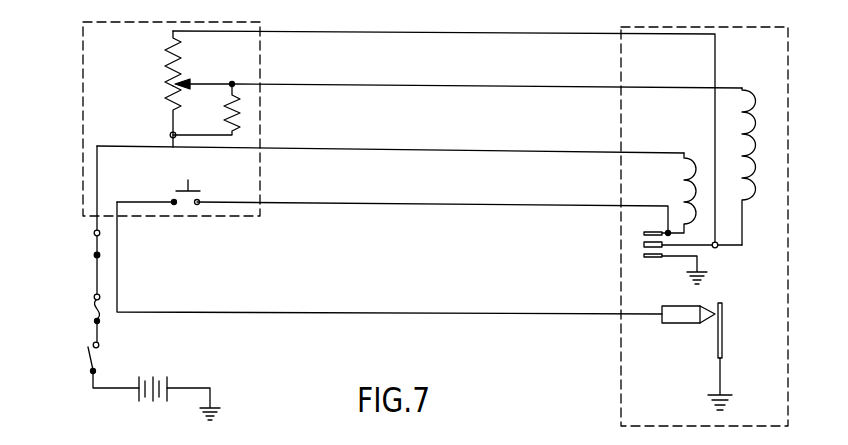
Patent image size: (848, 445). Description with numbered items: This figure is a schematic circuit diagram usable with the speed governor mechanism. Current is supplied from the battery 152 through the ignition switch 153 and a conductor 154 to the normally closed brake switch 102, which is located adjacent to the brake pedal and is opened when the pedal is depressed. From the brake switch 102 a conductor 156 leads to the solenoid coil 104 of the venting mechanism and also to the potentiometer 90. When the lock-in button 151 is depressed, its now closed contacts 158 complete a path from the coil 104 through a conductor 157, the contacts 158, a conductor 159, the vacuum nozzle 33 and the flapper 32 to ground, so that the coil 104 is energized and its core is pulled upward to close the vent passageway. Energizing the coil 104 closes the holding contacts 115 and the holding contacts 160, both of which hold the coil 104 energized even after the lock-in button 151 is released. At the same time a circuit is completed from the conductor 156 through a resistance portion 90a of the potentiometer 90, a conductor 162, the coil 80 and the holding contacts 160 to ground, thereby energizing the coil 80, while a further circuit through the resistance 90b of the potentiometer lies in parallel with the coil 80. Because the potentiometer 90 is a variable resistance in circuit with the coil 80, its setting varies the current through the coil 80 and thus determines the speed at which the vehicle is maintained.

The potentiometer 90 is at (142, 75).
The resistance portion of the potentiometer 90a is at (165, 97).
The resistance of the potentiometer 90b is at (165, 55).
The conductor 156 is at (134, 147).
The conductor 157 is at (368, 201).
The conductor 159 is at (272, 312).
The conductor 162 is at (413, 86).
The lock-in button 151 is at (198, 188).
The contacts of the switch 158 is at (183, 206).
The brake switch 102 is at (94, 239).
The conductor 154 is at (93, 284).
The ignition switch 153 is at (94, 357).
The battery 152 is at (159, 374).
The coil 80 is at (752, 140).
The solenoid coil 104 is at (683, 177).
The holding contacts 115 is at (644, 244).
The holding contacts 160 is at (644, 256).
The vacuum nozzle 33 is at (690, 306).
The flapper 32 is at (723, 331).